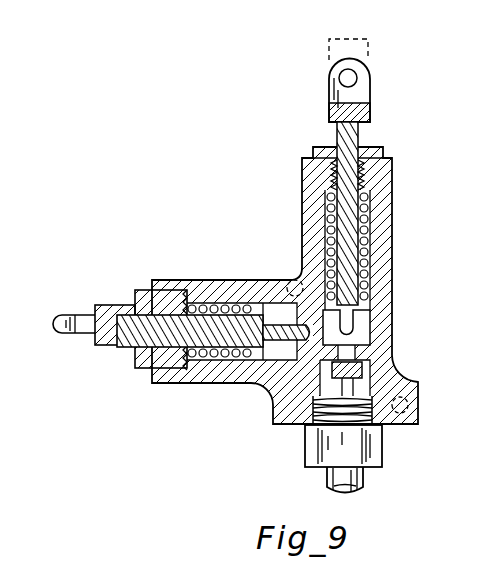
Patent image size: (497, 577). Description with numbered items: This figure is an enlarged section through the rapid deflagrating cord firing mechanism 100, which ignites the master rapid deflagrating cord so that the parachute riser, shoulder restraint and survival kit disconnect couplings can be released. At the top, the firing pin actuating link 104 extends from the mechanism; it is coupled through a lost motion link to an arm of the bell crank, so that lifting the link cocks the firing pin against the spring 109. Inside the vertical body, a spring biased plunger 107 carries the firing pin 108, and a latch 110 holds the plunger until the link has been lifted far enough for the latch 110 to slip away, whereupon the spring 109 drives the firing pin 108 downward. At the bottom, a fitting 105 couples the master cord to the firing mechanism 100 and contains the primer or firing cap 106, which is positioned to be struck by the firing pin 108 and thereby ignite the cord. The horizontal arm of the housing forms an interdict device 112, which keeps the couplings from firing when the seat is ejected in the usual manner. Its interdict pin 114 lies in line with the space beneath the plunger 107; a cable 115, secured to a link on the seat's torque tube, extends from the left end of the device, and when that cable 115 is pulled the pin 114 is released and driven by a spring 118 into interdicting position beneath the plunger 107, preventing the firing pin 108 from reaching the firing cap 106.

The rapid deflagrating cord firing mechanism 100 is at (393, 275).
The firing pin actuating link 104 is at (370, 51).
The fitting 105 is at (379, 446).
The firing cap 106 is at (360, 370).
The plunger 107 is at (347, 236).
The firing pin 108 is at (349, 328).
The spring 109 is at (366, 200).
The latch 110 is at (370, 123).
The interdict device 112 is at (243, 240).
The interdict pin 114 is at (268, 340).
The cable 115 is at (83, 340).
The spring 118 is at (215, 385).